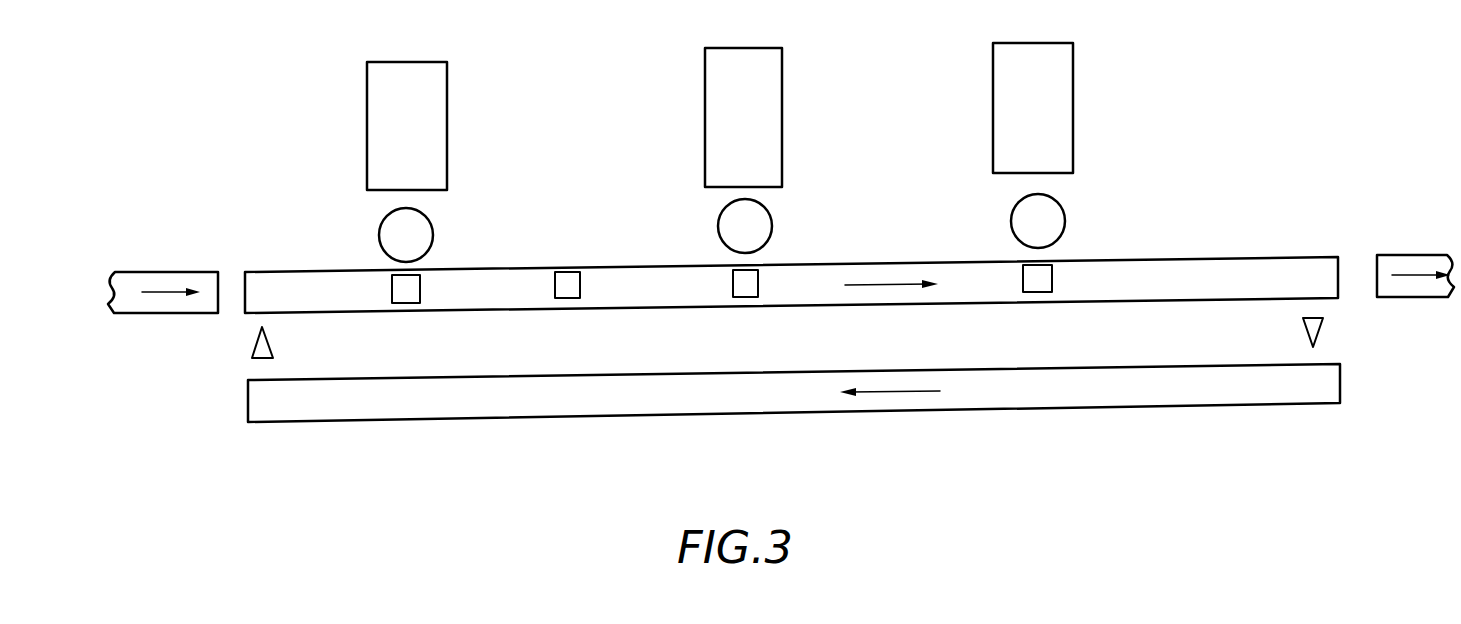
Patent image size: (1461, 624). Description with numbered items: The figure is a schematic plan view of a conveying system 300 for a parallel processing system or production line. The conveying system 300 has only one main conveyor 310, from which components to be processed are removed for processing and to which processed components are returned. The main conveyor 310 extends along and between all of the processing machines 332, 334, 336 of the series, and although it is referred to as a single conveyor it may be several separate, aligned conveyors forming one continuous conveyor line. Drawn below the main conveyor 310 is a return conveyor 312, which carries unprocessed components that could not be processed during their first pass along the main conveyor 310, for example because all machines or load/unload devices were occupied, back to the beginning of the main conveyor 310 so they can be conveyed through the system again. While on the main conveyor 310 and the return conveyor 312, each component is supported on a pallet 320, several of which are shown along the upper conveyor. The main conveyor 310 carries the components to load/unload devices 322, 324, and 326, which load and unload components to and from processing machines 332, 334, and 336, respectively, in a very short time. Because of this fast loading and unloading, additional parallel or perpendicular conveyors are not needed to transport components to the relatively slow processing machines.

The conveying system 300 is at (1283, 137).
The main conveyor 310 is at (272, 295).
The return conveyor 312 is at (1068, 395).
The pallet 320 is at (403, 295).
The load/unload device 322 is at (428, 230).
The load/unload device 324 is at (766, 223).
The load/unload device 326 is at (1060, 224).
The processing machine 332 is at (417, 88).
The processing machine 334 is at (763, 82).
The processing machine 336 is at (1060, 72).